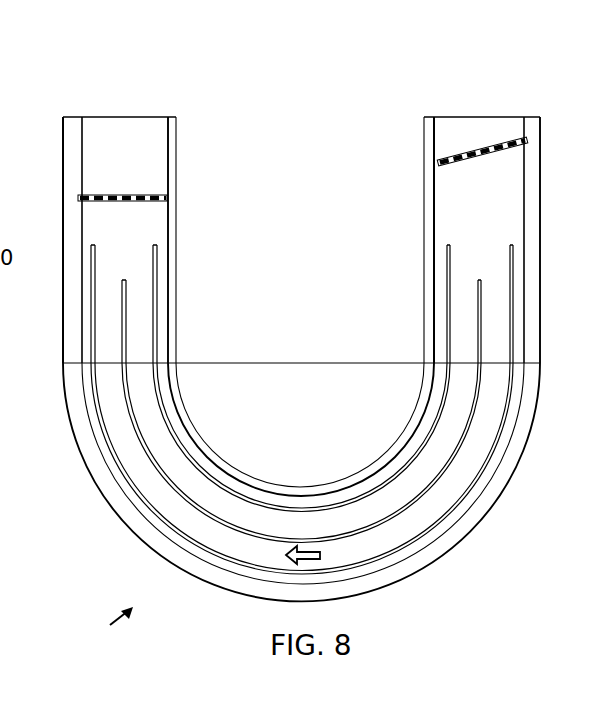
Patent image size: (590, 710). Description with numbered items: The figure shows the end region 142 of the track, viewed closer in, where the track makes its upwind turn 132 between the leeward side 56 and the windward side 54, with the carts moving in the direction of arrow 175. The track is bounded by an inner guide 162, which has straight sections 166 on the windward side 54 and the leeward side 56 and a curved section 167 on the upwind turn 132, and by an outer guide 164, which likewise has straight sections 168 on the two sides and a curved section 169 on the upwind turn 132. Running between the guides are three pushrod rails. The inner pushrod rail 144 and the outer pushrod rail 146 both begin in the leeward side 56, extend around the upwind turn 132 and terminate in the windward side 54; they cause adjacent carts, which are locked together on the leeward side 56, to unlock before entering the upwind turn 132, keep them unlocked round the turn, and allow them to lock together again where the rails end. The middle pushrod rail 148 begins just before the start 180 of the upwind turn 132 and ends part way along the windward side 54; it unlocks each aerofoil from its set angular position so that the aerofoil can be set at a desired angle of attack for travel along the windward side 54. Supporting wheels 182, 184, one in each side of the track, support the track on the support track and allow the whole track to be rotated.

The windward side 54 is at (133, 116).
The leeward side 56 is at (452, 117).
The upwind turn 132 is at (465, 533).
The end region 142 is at (104, 627).
The inner pushrod rail 144 is at (157, 300).
The outer pushrod rail 146 is at (127, 483).
The middle pushrod rail 148 is at (125, 343).
The inner guide 162 is at (435, 130).
The outer guide 164 is at (76, 130).
The straight sections 166 is at (177, 235).
The curved section 167 is at (187, 428).
The straight sections 168 is at (79, 165).
The curved section 169 is at (160, 532).
The arrow 175 is at (317, 558).
The start of the upwind turn 180 is at (465, 367).
The supporting wheel 182 is at (137, 197).
The supporting wheel 184 is at (473, 158).